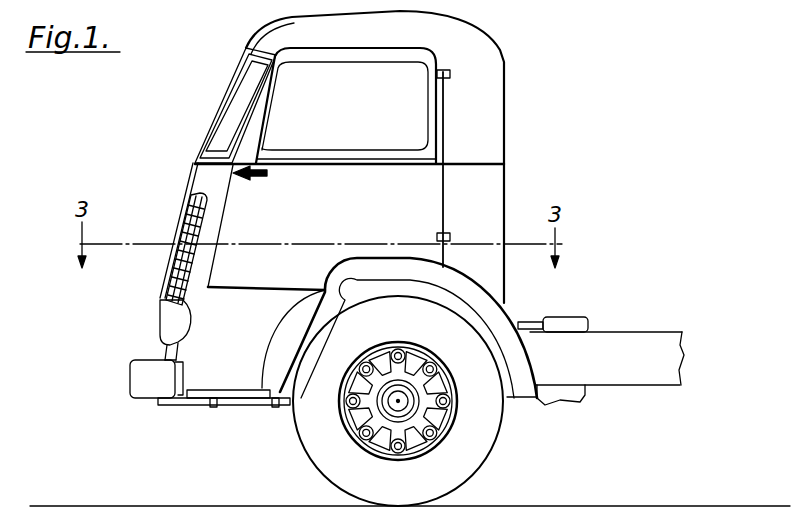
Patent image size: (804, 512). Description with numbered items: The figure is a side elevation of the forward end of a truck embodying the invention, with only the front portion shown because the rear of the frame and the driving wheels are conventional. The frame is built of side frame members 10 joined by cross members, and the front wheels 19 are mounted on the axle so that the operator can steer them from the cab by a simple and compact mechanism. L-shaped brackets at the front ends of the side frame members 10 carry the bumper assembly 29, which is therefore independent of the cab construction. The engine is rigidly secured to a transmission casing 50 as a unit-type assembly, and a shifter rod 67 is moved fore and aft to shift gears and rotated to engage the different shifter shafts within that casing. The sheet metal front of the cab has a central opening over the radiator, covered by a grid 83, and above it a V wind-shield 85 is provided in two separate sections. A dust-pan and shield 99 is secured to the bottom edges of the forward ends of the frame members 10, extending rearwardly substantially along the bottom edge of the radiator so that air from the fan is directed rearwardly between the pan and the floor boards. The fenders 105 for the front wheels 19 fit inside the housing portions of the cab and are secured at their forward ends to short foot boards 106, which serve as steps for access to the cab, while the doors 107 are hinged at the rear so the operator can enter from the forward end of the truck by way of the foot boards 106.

The side frame member 10 is at (637, 343).
The front wheel 19 is at (320, 468).
The bumper assembly 29 is at (143, 376).
The transmission casing 50 is at (572, 317).
The shifter rod 67 is at (523, 320).
The grid 83 is at (184, 211).
The V wind-shield 85 is at (245, 91).
The dust-pan and shield 99 is at (240, 405).
The fender 105 is at (288, 322).
The short foot board 106 is at (206, 397).
The door 107 is at (252, 192).